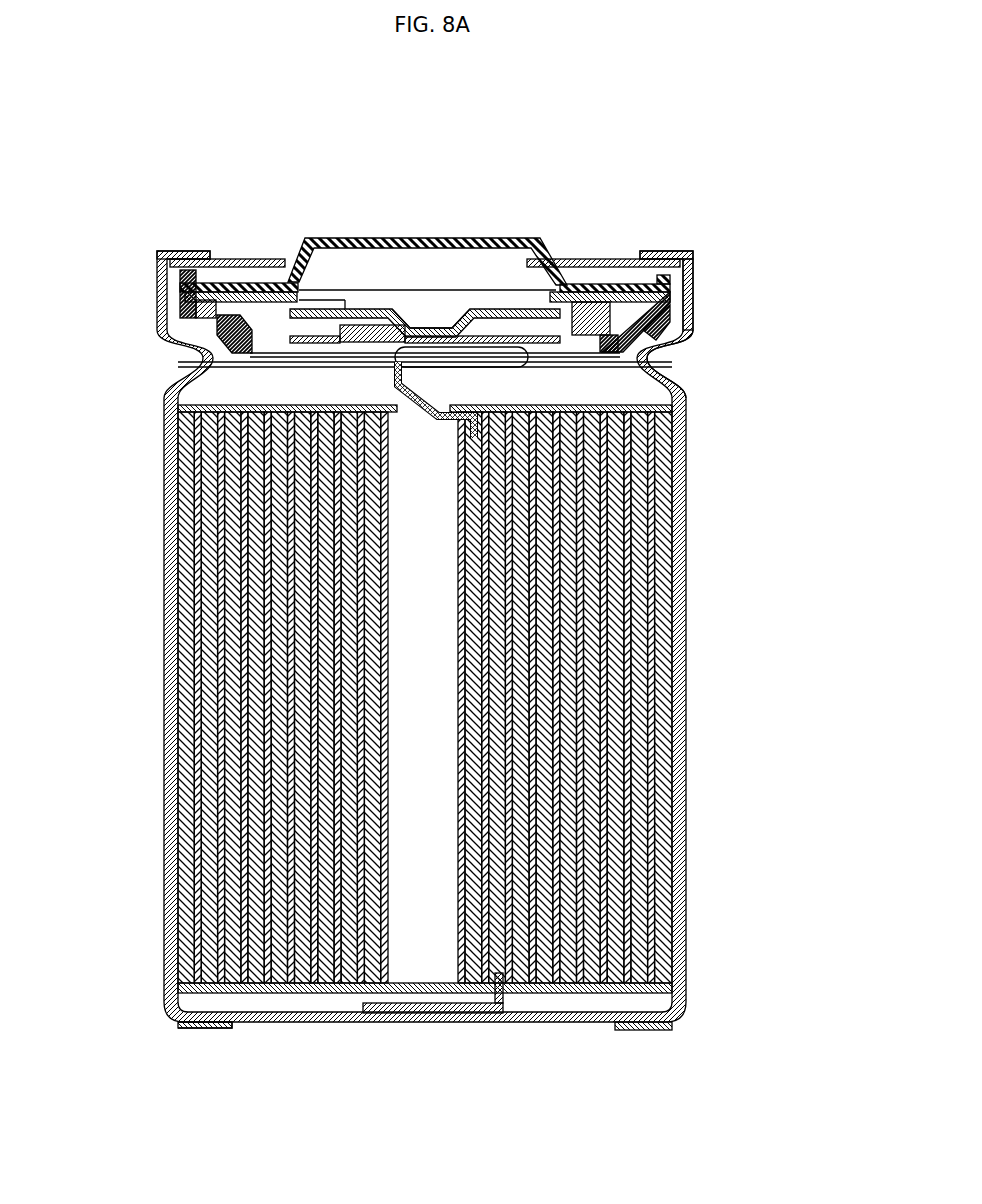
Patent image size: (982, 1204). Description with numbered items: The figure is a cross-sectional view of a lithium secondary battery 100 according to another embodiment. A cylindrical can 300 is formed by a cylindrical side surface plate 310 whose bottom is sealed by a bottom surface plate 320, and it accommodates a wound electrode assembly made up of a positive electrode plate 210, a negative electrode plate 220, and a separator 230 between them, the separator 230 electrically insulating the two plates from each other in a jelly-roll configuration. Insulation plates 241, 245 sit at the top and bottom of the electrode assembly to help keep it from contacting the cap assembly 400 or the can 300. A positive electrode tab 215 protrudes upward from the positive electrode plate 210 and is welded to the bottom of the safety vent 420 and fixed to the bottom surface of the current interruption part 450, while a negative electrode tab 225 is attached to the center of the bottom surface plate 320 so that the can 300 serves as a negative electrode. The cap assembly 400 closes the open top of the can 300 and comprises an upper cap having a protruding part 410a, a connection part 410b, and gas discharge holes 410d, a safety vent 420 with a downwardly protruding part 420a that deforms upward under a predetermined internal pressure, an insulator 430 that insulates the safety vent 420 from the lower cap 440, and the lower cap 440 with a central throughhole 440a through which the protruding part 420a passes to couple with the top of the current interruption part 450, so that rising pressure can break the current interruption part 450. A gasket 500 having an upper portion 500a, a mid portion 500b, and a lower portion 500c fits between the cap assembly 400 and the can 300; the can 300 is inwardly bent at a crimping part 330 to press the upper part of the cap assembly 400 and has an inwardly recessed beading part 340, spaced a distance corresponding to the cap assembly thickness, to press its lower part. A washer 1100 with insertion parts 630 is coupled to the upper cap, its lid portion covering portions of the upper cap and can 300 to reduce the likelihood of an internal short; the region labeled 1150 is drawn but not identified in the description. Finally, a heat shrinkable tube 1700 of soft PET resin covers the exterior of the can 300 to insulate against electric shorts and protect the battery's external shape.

The lithium secondary battery 100 is at (88, 112).
The washer 1100 is at (225, 186).
The upper fixing portion 1150 is at (197, 251).
The insertion parts 630 is at (252, 259).
The cap assembly 400 is at (675, 142).
The connection part 410b is at (293, 268).
The current interruption part 450 is at (345, 340).
The protruding part 420a is at (418, 320).
The protruding part 410a is at (440, 300).
The throughhole 440a is at (458, 332).
The gas discharge holes 410d is at (548, 262).
The safety vent 420 is at (590, 292).
The insulator 430 is at (628, 302).
The lower cap 440 is at (668, 290).
The upper portion 500a is at (690, 256).
The mid portion 500b is at (690, 292).
The lower portion 500c is at (662, 340).
The gasket 500 is at (783, 240).
The crimping part 330 is at (178, 296).
The beading part 340 is at (200, 348).
The cylindrical can 300 is at (80, 280).
The cylindrical side surface plate 310 is at (172, 468).
The bottom surface plate 320 is at (175, 1012).
The positive electrode tab 215 is at (440, 383).
The insulation plate 241 is at (430, 408).
The positive electrode plate 210 is at (665, 468).
The separator 230 is at (660, 503).
The negative electrode plate 220 is at (658, 540).
The insulation plate 245 is at (672, 990).
The negative electrode tab 225 is at (490, 1015).
The heat shrinkable tube 1700 is at (215, 1035).